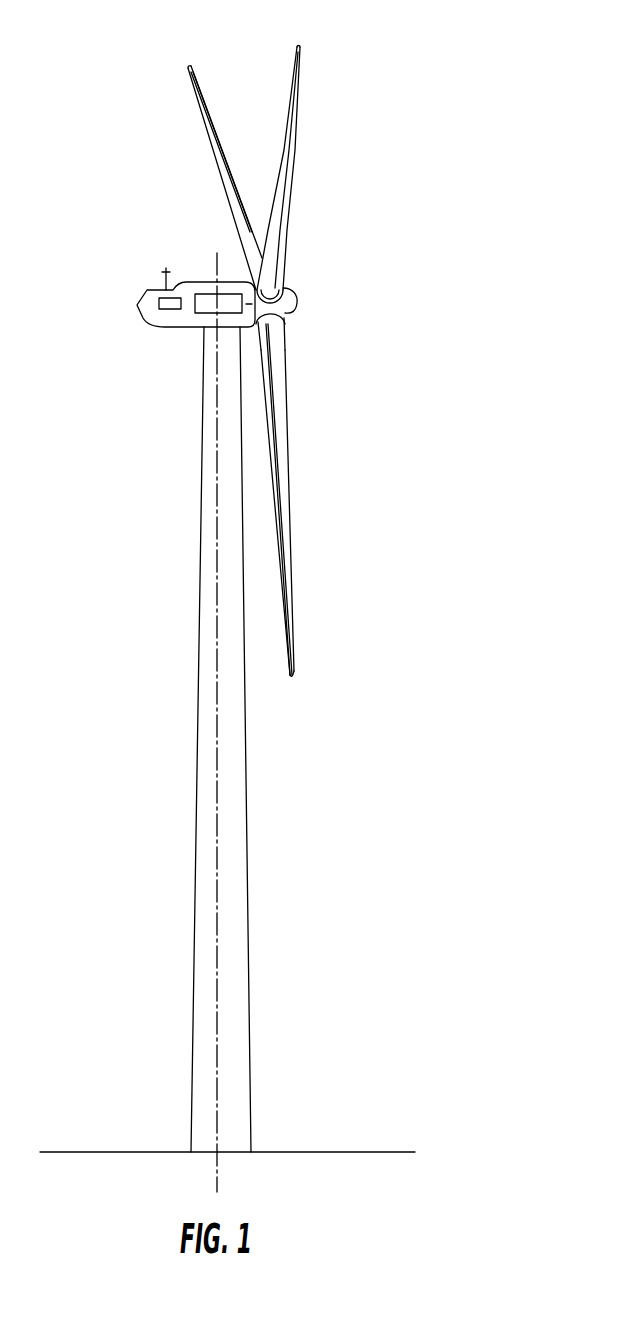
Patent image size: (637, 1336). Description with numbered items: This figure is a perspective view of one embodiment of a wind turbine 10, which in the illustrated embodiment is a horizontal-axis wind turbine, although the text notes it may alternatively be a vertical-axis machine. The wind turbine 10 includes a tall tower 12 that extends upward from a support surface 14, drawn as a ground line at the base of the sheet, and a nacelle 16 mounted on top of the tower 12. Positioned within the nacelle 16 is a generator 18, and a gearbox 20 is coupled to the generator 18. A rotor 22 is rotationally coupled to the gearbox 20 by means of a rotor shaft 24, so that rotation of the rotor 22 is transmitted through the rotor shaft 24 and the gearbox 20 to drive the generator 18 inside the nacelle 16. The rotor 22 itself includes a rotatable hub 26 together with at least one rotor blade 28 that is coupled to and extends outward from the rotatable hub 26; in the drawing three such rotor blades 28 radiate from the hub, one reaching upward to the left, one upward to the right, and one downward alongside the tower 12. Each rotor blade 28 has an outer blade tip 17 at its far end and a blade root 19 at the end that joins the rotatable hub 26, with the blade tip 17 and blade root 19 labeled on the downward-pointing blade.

The wind turbine 10 is at (437, 94).
The tower 12 is at (196, 866).
The support surface 14 is at (117, 1152).
The nacelle 16 is at (157, 328).
The blade tip 17 is at (293, 678).
The generator 18 is at (158, 290).
The blade root 19 is at (285, 338).
The gearbox 20 is at (203, 293).
The rotor 22 is at (303, 279).
The rotor shaft 24 is at (248, 304).
The rotatable hub 26 is at (291, 312).
The rotor blade 28 is at (208, 130).